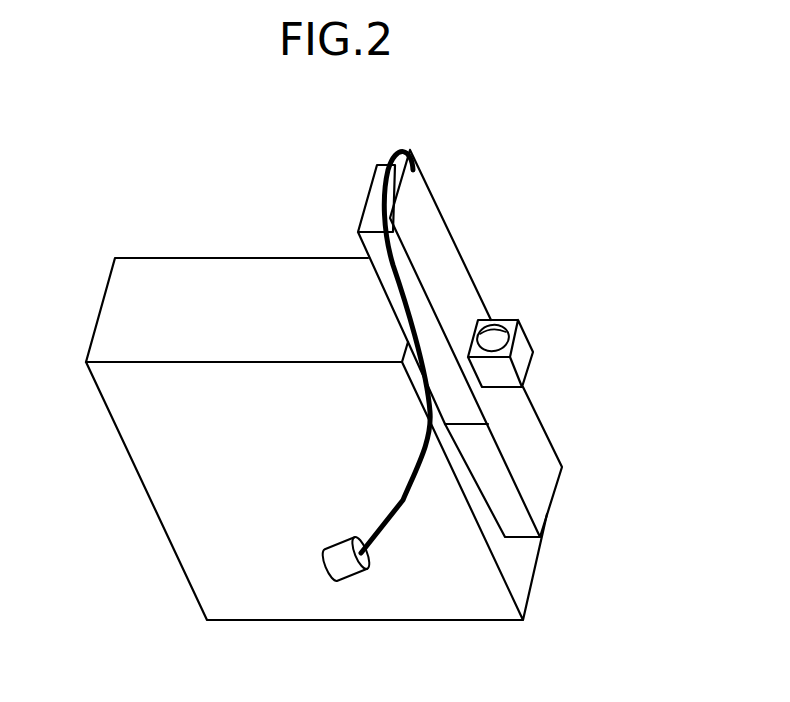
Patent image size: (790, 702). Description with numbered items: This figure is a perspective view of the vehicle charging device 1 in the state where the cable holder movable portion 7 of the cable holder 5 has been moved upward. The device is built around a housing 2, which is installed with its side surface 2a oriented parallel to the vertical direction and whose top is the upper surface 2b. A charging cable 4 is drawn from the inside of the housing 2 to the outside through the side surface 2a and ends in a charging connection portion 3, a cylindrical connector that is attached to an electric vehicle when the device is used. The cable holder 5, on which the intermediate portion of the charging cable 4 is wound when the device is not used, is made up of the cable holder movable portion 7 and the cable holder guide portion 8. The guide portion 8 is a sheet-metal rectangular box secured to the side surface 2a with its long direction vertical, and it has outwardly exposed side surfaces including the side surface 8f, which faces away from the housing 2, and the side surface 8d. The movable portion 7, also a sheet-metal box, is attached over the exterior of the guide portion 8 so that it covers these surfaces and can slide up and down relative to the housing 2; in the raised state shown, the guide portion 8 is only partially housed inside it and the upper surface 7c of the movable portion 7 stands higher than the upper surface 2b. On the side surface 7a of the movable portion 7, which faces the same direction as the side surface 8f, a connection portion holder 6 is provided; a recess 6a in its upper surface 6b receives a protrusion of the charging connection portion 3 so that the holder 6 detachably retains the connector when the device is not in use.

The vehicle charging device 1 is at (79, 169).
The housing 2 is at (137, 503).
The side surface of housing 2a is at (517, 572).
The upper surface of housing 2b is at (157, 285).
The charging connection portion 3 is at (353, 568).
The charging cable 4 is at (390, 523).
The cable holder 5 is at (591, 207).
The connection portion holder 6 is at (522, 362).
The recess 6a is at (512, 336).
The upper surface of connection portion holder 6b is at (510, 325).
The cable holder movable portion 7 is at (487, 280).
The side surface of cable holder movable portion 7a is at (428, 218).
The upper surface of cable holder movable portion 7c is at (372, 220).
The cable holder guide portion 8 is at (556, 415).
The side surface of cable holder guide portion 8d is at (510, 511).
The outwardly exposed side surface of cable holder guide portion 8f is at (562, 462).